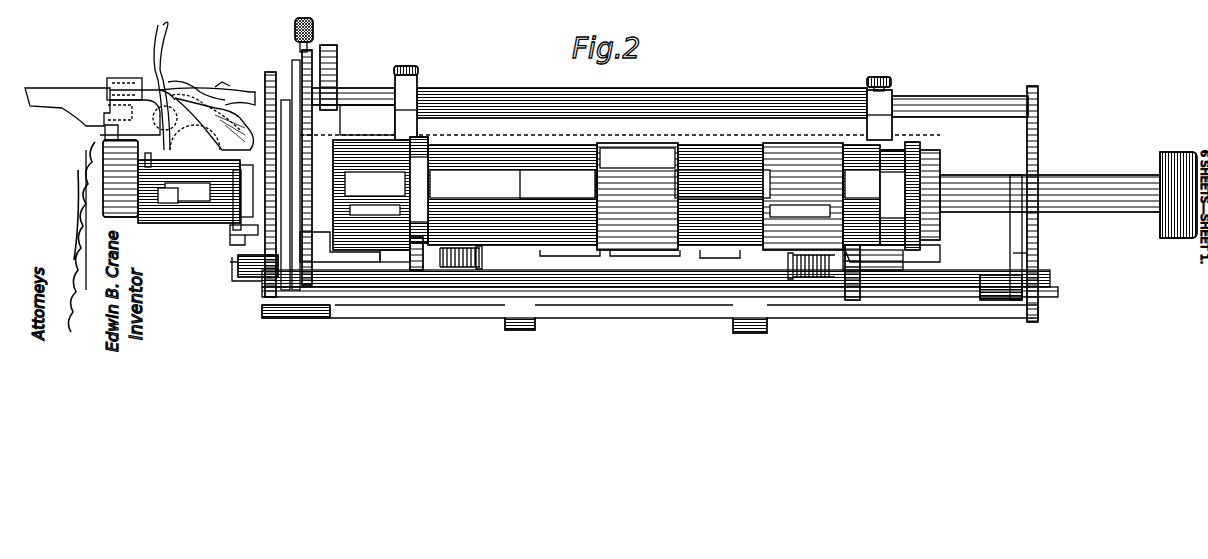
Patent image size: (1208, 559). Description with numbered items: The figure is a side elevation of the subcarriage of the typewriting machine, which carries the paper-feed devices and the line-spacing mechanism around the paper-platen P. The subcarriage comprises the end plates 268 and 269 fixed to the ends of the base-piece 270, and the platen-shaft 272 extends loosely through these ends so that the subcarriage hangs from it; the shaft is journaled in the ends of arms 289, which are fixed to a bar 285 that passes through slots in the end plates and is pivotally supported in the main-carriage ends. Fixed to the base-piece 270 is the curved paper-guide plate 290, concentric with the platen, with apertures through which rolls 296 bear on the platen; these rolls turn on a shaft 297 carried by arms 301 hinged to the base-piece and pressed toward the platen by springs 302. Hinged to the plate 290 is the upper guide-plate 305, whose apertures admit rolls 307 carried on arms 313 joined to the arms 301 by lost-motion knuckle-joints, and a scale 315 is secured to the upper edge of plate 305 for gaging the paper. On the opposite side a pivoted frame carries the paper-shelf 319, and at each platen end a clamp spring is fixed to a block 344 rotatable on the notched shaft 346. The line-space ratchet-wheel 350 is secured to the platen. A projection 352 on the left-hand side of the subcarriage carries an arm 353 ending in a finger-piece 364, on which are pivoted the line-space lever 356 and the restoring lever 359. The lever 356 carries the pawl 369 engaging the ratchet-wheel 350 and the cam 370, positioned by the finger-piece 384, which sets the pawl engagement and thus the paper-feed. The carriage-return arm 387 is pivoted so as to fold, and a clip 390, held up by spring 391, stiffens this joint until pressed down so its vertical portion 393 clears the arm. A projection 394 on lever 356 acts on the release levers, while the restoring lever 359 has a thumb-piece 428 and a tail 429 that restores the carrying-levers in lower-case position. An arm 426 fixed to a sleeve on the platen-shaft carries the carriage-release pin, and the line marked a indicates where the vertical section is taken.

The thumb-piece 428 is at (165, 28).
The spring 391 is at (140, 80).
The arm 353 is at (178, 82).
The carrying-levers restoring lever 359 is at (174, 88).
The finger-piece 364 is at (125, 78).
The line-space lever 356 is at (222, 105).
The projection 394 is at (263, 108).
The arm 387 is at (38, 90).
The clip 390 is at (108, 85).
The vertical portion 393 is at (94, 124).
The arm 426 is at (233, 205).
The projection 352 is at (255, 232).
The tail 429 is at (263, 253).
The end plate 268 is at (263, 280).
The arms 289 is at (1038, 254).
The finger-piece 384 is at (313, 28).
The cam 370 is at (334, 55).
The pawl 369 is at (305, 100).
The paper-platen P is at (332, 138).
The section line a b a is at (404, 344).
The arms 313 is at (875, 192).
The block 344 is at (417, 77).
The line-space ratchet-wheel 350 is at (292, 232).
The guide-plate 305 is at (588, 195).
The rolls 307 is at (813, 178).
The scale 315 is at (572, 140).
The paper-shelf 319 is at (607, 118).
The shaft 346 is at (945, 100).
The end plate 269 is at (1039, 127).
The platen-shaft 272 is at (1047, 205).
The paper-guide plate 290 is at (920, 234).
The rolls 296 is at (647, 228).
The shaft 297 is at (568, 230).
The base-piece 270 is at (358, 304).
The bar 285 is at (672, 287).
The arms 301 is at (420, 253).
The springs 302 is at (463, 268).